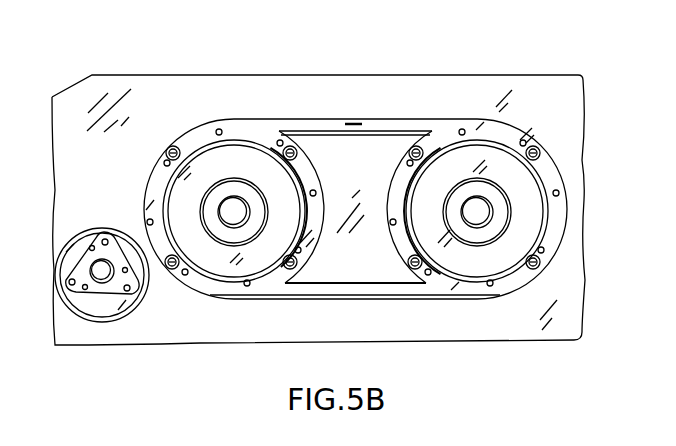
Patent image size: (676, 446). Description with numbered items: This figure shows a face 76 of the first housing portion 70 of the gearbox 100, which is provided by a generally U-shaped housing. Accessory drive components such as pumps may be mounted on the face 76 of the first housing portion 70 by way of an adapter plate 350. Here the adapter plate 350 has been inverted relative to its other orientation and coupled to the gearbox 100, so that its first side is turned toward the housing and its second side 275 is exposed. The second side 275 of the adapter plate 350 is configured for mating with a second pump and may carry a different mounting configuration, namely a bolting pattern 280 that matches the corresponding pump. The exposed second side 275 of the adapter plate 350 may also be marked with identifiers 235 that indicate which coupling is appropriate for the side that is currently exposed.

The first housing portion 70 is at (575, 310).
The face 76 is at (568, 93).
The gearbox 100 is at (384, 85).
The identifiers 235 is at (353, 124).
The second side 275 is at (493, 130).
The bolting pattern 280 is at (167, 159).
The adapter plate 350 is at (265, 129).